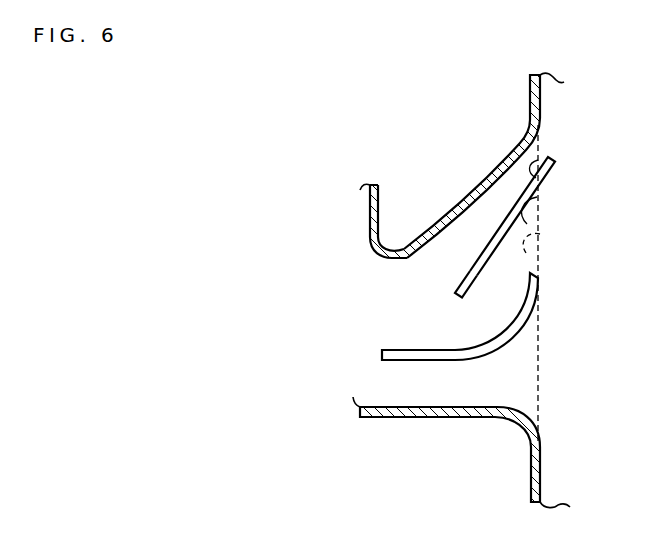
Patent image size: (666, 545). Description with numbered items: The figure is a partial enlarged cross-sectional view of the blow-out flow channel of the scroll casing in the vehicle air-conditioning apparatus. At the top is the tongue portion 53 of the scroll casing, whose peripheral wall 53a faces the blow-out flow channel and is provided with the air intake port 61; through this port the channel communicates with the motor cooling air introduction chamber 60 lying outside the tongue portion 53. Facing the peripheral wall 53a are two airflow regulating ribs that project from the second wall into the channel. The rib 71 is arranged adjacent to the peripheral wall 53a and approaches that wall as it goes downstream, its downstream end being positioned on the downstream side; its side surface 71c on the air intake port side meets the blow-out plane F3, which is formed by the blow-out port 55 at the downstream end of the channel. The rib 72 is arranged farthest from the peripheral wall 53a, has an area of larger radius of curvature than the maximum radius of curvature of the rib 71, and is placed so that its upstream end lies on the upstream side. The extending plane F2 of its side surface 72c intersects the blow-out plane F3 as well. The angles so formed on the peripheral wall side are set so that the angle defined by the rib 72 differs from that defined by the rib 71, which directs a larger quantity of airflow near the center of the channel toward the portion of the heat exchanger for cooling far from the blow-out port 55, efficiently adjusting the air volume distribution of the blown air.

The motor cooling air introduction chamber 60 is at (449, 170).
The air intake port 61 is at (480, 211).
The tongue portion 53 is at (368, 254).
The peripheral wall 53a is at (428, 250).
The airflow regulating rib 71 is at (549, 172).
The side surface 71c is at (465, 276).
The extending plane F2 is at (545, 237).
The blow-out plane F3 is at (538, 390).
The airflow regulating rib 72 is at (424, 361).
The side surface 72c is at (405, 350).
The blow-out port 55 is at (537, 424).